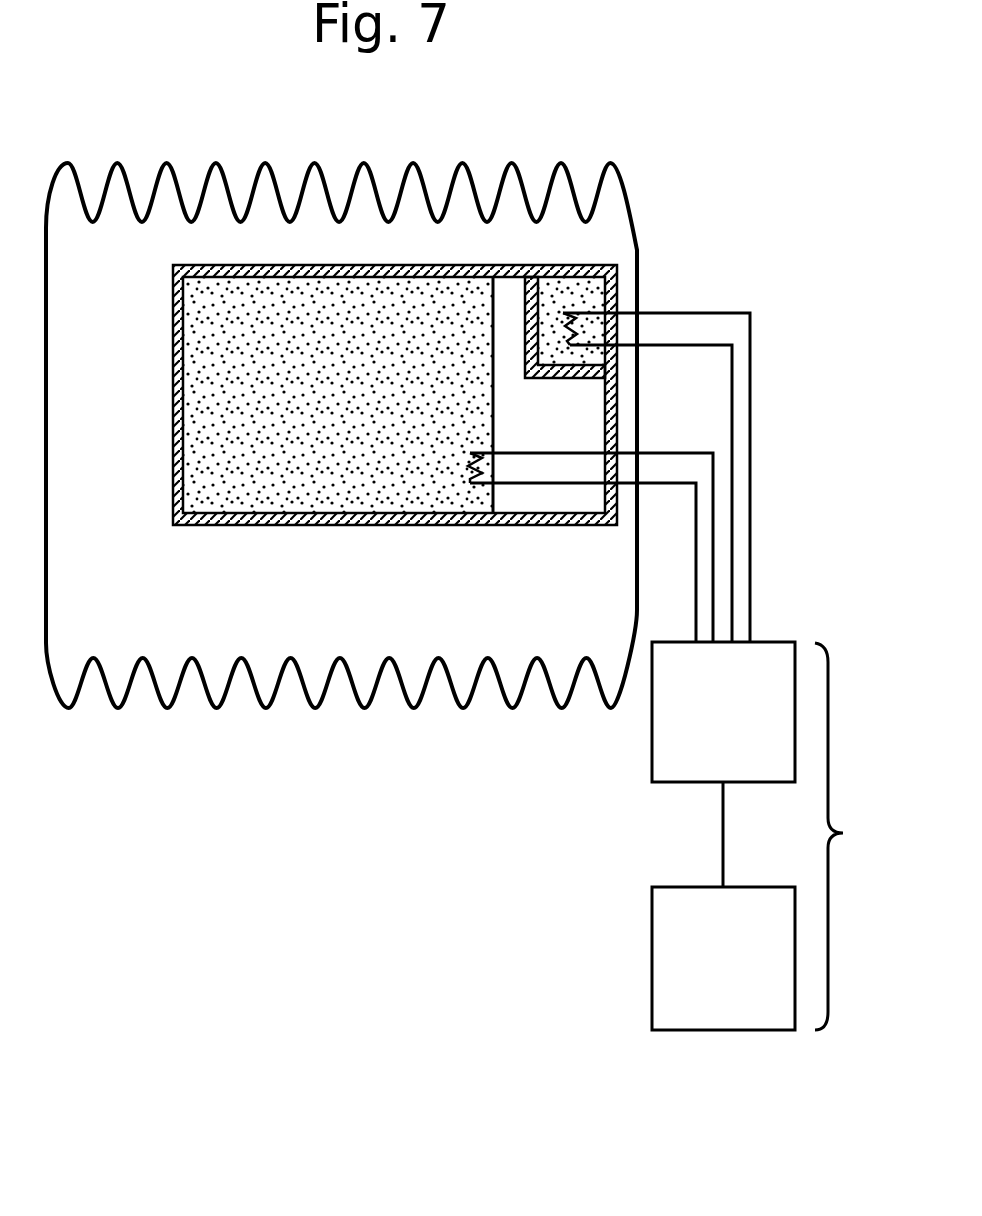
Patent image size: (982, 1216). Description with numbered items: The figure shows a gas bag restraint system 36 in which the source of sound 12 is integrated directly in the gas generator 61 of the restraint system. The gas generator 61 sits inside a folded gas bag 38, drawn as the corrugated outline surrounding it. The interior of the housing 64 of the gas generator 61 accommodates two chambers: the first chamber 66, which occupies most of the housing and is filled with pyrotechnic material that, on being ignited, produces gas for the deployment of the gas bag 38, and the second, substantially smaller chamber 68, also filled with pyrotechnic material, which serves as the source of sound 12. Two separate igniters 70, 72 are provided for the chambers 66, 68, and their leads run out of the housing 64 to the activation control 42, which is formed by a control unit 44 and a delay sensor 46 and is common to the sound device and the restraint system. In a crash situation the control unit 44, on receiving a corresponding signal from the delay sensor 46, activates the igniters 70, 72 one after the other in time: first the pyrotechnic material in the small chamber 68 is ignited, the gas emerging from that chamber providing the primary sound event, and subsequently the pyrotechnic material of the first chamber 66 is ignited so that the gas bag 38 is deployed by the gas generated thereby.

The source of sound 12 is at (622, 303).
The gas bag restraint system 36 is at (198, 869).
The gas bag 38 is at (366, 712).
The activation control 42 is at (850, 836).
The control unit 44 is at (667, 745).
The delay sensor 46 is at (667, 953).
The gas generator 61 is at (183, 530).
The housing 64 is at (176, 434).
The first chamber 66 is at (198, 344).
The second chamber 68 is at (615, 305).
The igniter 70 is at (563, 313).
The igniter 72 is at (470, 483).